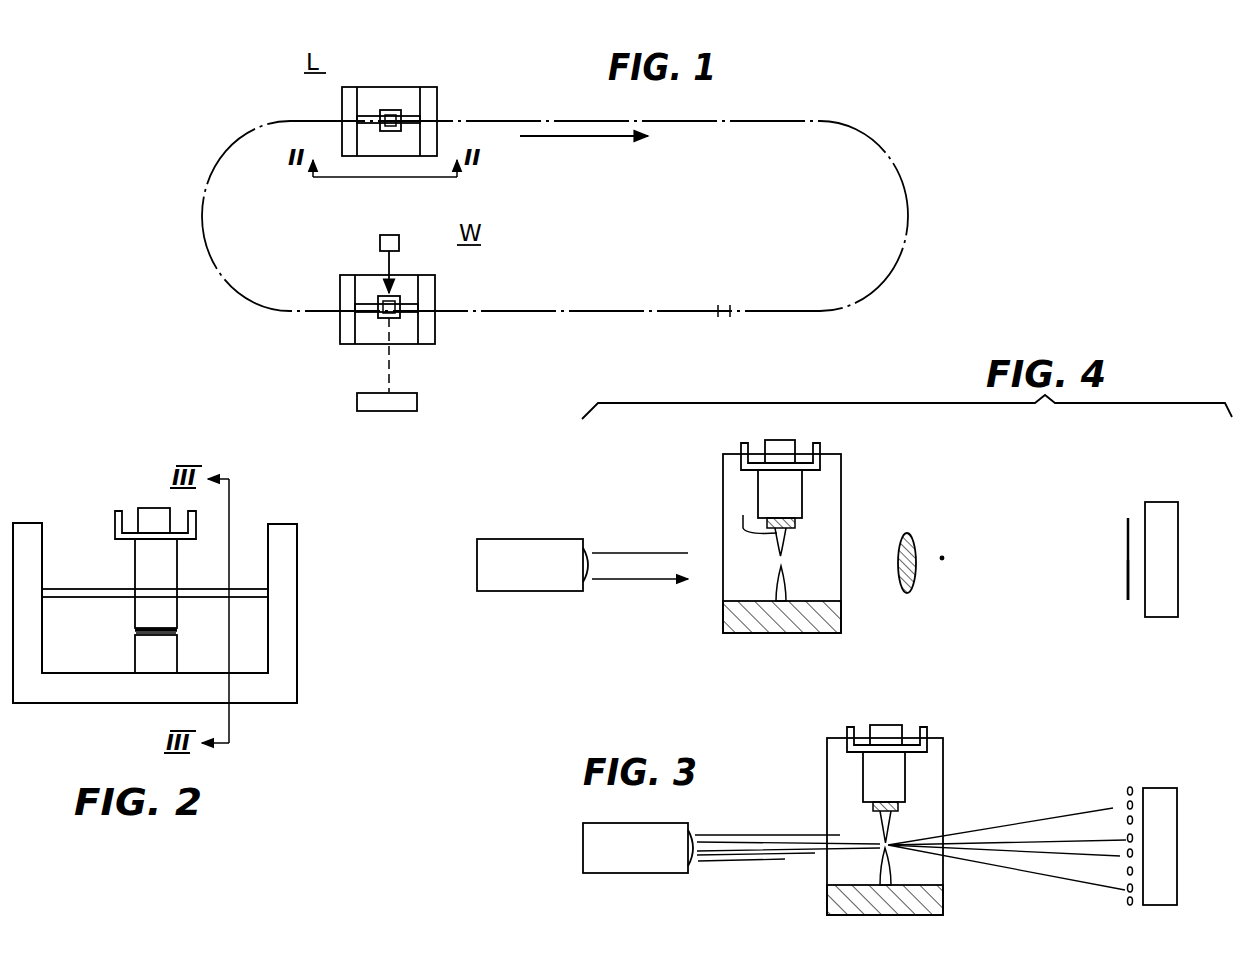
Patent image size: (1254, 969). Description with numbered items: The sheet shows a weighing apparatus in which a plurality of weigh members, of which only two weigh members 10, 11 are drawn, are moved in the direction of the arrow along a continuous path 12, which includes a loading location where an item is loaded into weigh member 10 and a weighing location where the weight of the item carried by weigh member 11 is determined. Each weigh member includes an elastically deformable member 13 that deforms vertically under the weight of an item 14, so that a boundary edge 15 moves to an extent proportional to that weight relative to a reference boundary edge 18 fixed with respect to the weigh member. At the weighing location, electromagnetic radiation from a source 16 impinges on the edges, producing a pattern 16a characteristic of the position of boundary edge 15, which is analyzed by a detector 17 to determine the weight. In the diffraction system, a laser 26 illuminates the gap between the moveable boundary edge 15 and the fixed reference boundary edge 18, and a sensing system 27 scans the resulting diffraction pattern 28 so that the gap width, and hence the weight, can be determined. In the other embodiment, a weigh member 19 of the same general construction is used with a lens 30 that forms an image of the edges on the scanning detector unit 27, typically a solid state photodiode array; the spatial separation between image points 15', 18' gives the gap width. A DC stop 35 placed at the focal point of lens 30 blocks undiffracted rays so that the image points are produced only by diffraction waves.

In FIG. 1, the weigh member 10 is at (408, 77).
In FIG. 2, the weigh member 10 is at (303, 615).
In FIG. 1, the weigh member 11 is at (334, 332).
In FIG. 1, the continuous path 12 is at (897, 268).
In FIG. 1, the elastically deformable member 13 is at (366, 115).
In FIG. 2, the elastically deformable member 13 is at (73, 589).
In FIG. 3, the elastically deformable member 13 is at (900, 808).
In FIG. 4, the elastically deformable member 13 is at (798, 526).
In FIG. 2, the item 14 is at (143, 508).
In FIG. 3, the item 14 is at (896, 727).
In FIG. 4, the item 14 is at (793, 443).
In FIG. 2, the boundary edge 15 is at (182, 617).
In FIG. 3, the boundary edge 15 is at (904, 827).
In FIG. 4, the boundary edge 15 is at (804, 541).
In FIG. 1, the source 16 is at (399, 240).
In FIG. 1, the pattern 16a is at (391, 376).
In FIG. 1, the detector 17 is at (418, 404).
In FIG. 2, the reference boundary edge 18 is at (132, 638).
In FIG. 3, the reference boundary edge 18 is at (867, 866).
In FIG. 4, the reference boundary edge 18 is at (804, 583).
In FIG. 4, the weigh member 19 is at (847, 450).
In FIG. 3, the laser 26 is at (649, 861).
In FIG. 4, the laser 26 is at (548, 578).
In FIG. 3, the sensing system 27 is at (1157, 790).
In FIG. 4, the sensing system 27 is at (1165, 502).
In FIG. 3, the diffraction pattern 28 is at (1122, 902).
In FIG. 4, the lens 30 is at (910, 535).
In FIG. 4, the DC stop 35 is at (942, 566).
In FIG. 4, the image point 18' is at (1108, 539).
In FIG. 4, the image point 15' is at (1106, 602).